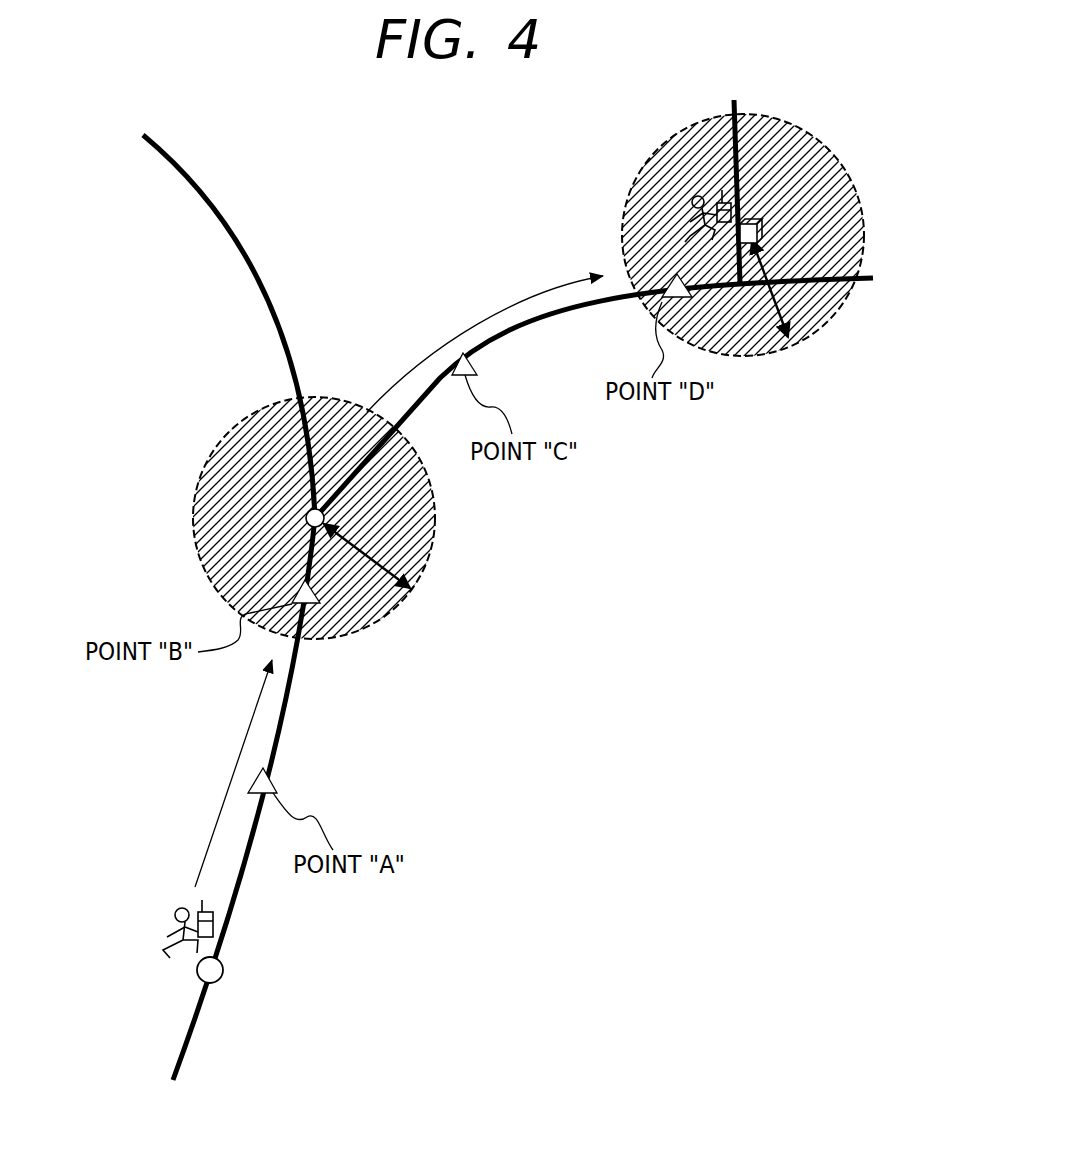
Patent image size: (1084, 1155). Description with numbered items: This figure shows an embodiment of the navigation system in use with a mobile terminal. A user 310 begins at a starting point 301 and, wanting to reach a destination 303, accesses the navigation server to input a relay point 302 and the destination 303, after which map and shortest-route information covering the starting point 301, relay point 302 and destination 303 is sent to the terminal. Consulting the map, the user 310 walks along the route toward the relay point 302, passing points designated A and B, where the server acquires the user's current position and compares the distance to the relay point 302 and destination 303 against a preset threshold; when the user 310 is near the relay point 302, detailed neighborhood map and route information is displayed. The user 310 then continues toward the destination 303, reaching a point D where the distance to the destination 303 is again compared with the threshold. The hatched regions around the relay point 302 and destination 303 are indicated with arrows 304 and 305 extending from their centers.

The starting point 301 is at (220, 980).
The relay point 302 is at (305, 515).
The destination 303 is at (757, 215).
The service area radius arrow 304 is at (412, 592).
The service area radius arrow 305 is at (788, 340).
The user 310 is at (168, 913).